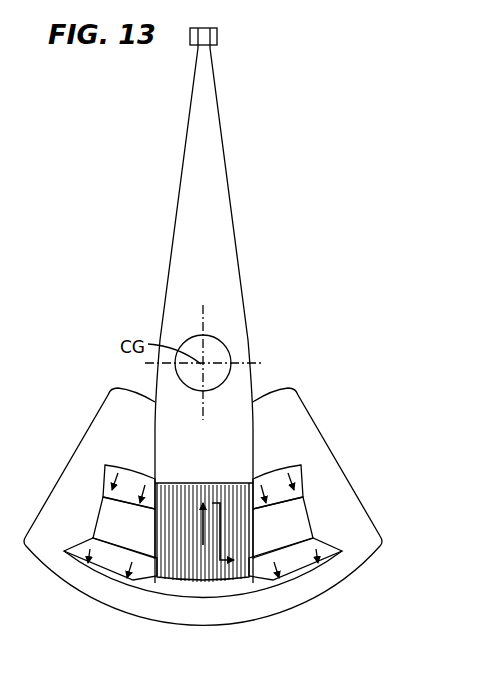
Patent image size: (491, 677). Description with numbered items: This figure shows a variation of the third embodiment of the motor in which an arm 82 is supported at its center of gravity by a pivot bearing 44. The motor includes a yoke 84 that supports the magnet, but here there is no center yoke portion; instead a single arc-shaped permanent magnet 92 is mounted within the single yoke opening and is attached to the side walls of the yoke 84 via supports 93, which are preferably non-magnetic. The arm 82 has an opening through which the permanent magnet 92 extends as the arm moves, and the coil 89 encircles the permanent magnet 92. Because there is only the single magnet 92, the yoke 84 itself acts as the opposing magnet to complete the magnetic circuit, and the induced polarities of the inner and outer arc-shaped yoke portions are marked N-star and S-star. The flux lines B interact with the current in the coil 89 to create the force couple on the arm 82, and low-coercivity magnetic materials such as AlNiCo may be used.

The arm 82 is at (232, 170).
The pivot bearing 44 is at (229, 352).
The yoke 84 is at (322, 442).
The arc-shaped permanent magnet 92 is at (105, 493).
The supports 93 is at (93, 512).
The coil 89 is at (212, 574).